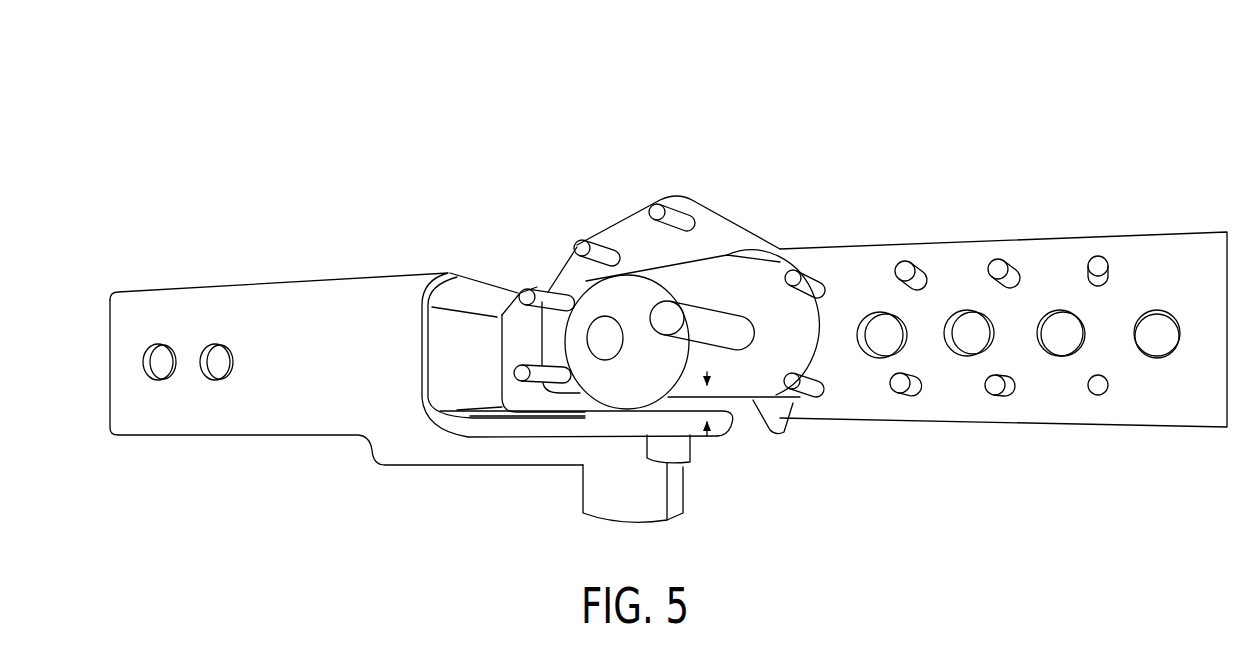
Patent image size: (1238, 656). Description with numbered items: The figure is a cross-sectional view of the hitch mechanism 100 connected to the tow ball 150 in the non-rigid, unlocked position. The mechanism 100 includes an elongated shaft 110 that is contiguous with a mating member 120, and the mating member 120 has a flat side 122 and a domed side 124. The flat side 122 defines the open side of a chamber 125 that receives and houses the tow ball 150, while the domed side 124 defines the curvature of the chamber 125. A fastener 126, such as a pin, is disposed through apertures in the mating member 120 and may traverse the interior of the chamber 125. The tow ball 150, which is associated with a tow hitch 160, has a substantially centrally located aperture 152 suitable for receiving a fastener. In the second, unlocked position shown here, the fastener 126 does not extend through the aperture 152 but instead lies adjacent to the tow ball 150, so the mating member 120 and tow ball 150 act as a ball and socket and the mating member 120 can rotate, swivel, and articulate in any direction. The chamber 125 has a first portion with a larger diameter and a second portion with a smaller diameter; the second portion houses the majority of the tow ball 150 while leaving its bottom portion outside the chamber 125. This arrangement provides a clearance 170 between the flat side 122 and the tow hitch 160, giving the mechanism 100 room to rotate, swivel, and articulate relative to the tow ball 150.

The hitch mechanism 100 is at (806, 86).
The elongated shaft 110 is at (987, 240).
The mating member 120 is at (548, 170).
The flat side 122 is at (573, 397).
The domed side 124 is at (628, 222).
The chamber 125 is at (750, 293).
The fastener 126 is at (677, 310).
The tow ball 150 is at (607, 295).
The aperture 152 is at (597, 318).
The tow hitch 160 is at (543, 413).
The clearance 170 is at (710, 403).